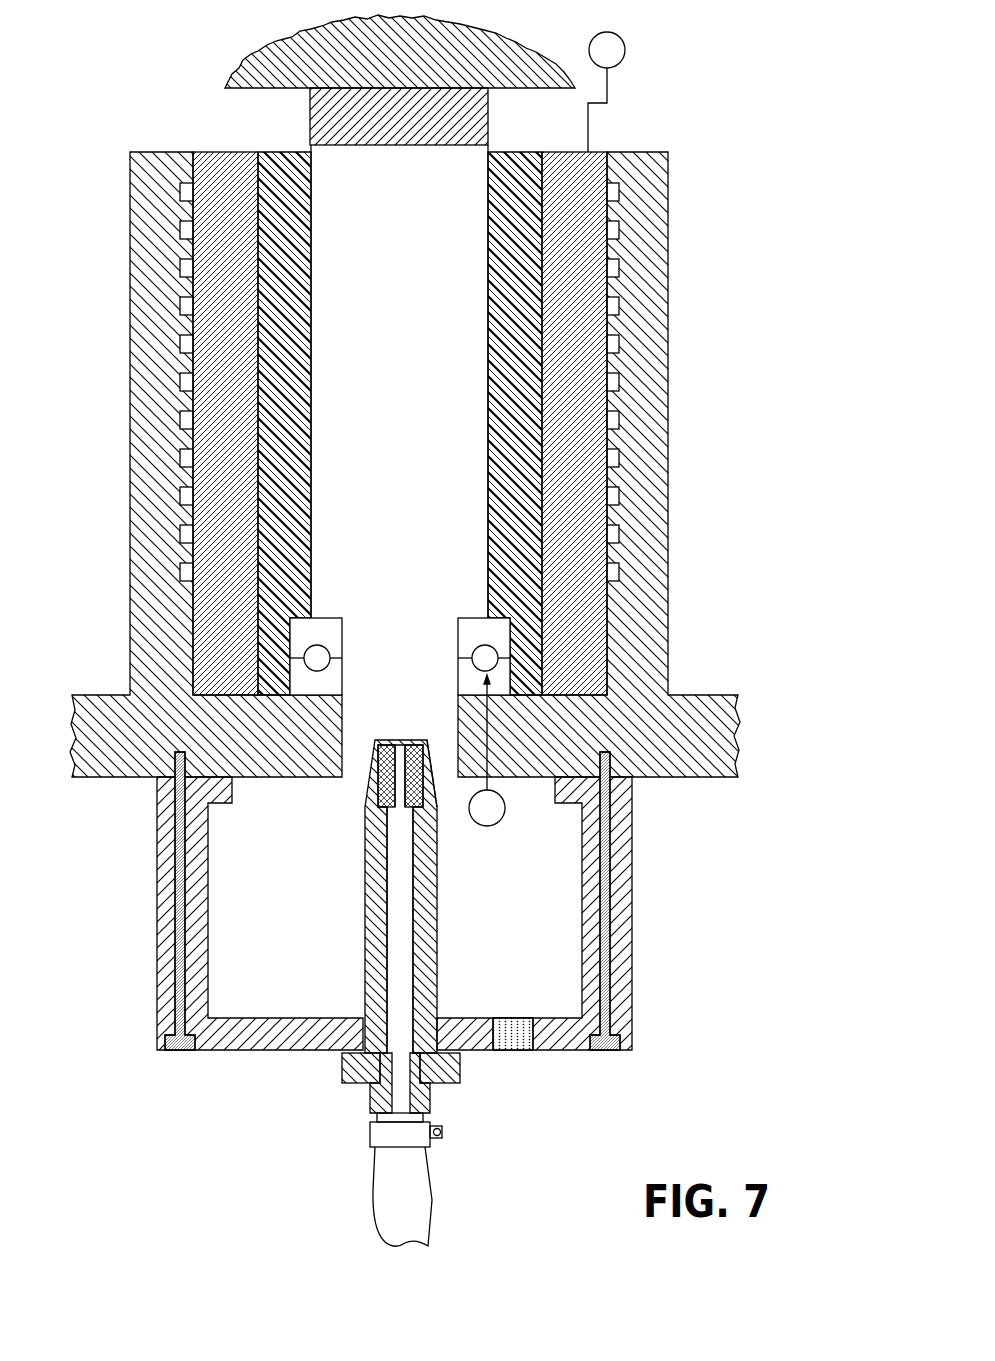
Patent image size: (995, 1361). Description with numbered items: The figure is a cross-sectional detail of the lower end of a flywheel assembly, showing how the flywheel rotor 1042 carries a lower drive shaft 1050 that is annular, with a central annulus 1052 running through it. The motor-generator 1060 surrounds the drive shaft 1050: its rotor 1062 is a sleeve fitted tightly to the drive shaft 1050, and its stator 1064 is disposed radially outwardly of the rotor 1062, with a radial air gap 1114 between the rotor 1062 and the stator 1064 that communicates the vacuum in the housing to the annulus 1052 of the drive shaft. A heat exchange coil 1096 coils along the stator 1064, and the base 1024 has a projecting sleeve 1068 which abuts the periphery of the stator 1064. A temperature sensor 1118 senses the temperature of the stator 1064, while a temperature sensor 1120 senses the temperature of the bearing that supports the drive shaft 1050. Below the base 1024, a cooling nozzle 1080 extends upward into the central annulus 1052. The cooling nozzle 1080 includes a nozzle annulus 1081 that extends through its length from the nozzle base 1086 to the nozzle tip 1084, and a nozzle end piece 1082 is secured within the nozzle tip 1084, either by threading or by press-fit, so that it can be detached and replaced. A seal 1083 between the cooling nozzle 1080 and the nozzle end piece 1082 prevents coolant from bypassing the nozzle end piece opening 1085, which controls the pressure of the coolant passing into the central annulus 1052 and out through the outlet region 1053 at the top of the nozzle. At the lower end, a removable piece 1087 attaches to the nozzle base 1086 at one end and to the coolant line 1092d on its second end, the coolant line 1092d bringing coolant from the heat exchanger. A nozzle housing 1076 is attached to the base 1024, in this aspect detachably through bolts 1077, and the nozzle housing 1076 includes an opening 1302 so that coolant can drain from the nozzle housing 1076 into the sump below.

The base 1024 is at (662, 780).
The rotor 1042 is at (413, 72).
The drive shaft 1050 is at (489, 104).
The central annulus 1052 is at (428, 426).
The channel outlet 1053 is at (372, 722).
The motor-generator 1060 is at (206, 115).
The rotor 1062 is at (512, 152).
The stator 1064 is at (203, 150).
The projecting sleeve 1068 is at (130, 203).
The nozzle housing 1076 is at (633, 930).
The bolts 1077 is at (612, 1000).
The cooling nozzle 1080 is at (437, 905).
The nozzle annulus 1081 is at (412, 950).
The nozzle end piece 1082 is at (430, 800).
The seal 1083 is at (423, 775).
The nozzle tip 1084 is at (428, 745).
The nozzle end piece opening 1085 is at (398, 760).
The nozzle base 1086 is at (355, 1094).
The removable piece 1087 is at (432, 1100).
The coolant line 1092d is at (412, 1196).
The heat exchange coil 1096 is at (183, 456).
The radial air gap 1114 is at (259, 146).
The temperature sensor 1118 is at (626, 50).
The temperature sensor 1120 is at (503, 816).
The opening 1302 is at (513, 1042).